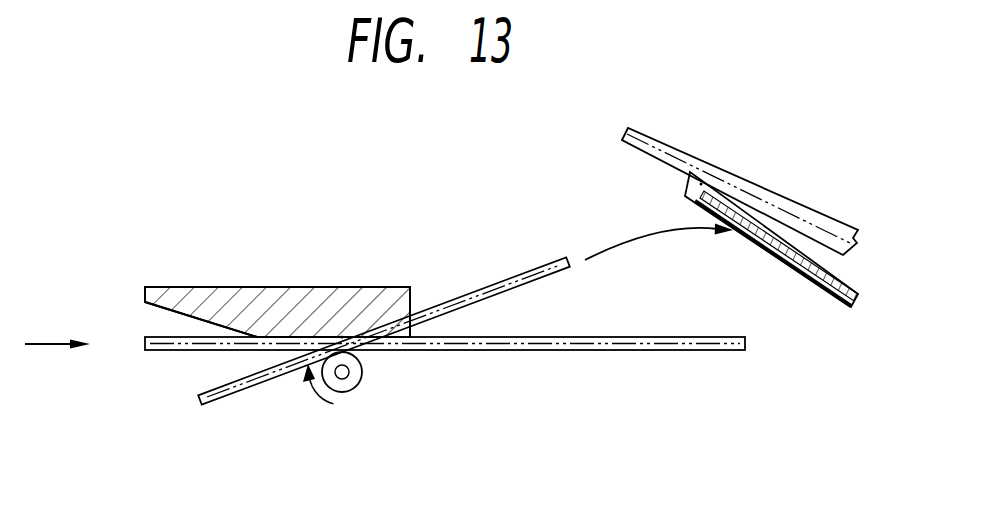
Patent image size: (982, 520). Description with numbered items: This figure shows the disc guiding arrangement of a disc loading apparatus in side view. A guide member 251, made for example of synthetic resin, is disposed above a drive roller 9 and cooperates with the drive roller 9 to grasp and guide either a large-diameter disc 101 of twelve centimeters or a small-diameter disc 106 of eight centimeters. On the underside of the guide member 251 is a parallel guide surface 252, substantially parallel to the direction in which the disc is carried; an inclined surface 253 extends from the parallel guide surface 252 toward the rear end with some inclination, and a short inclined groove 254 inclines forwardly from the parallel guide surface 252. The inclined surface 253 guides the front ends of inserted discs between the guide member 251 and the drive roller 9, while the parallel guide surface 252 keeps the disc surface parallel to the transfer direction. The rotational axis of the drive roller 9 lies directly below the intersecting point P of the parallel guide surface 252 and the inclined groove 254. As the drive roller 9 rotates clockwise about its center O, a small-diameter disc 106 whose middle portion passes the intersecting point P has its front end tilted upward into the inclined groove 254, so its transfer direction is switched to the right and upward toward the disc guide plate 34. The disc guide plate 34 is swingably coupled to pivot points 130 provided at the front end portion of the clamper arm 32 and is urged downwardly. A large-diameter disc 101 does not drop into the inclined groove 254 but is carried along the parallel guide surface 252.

The large-diameter disc 101 is at (690, 337).
The guide member 251 is at (291, 287).
The parallel guide surface 252 is at (296, 339).
The inclined surface 253 is at (165, 312).
The inclined groove 254 is at (395, 325).
The intersecting point P is at (342, 372).
The small-diameter disc 106 is at (526, 270).
The drive roller 9 is at (364, 372).
The rotation center O is at (345, 376).
The clamper arm 32 is at (672, 152).
The pivot point 130 is at (688, 189).
The disc guide plate 34 is at (798, 258).